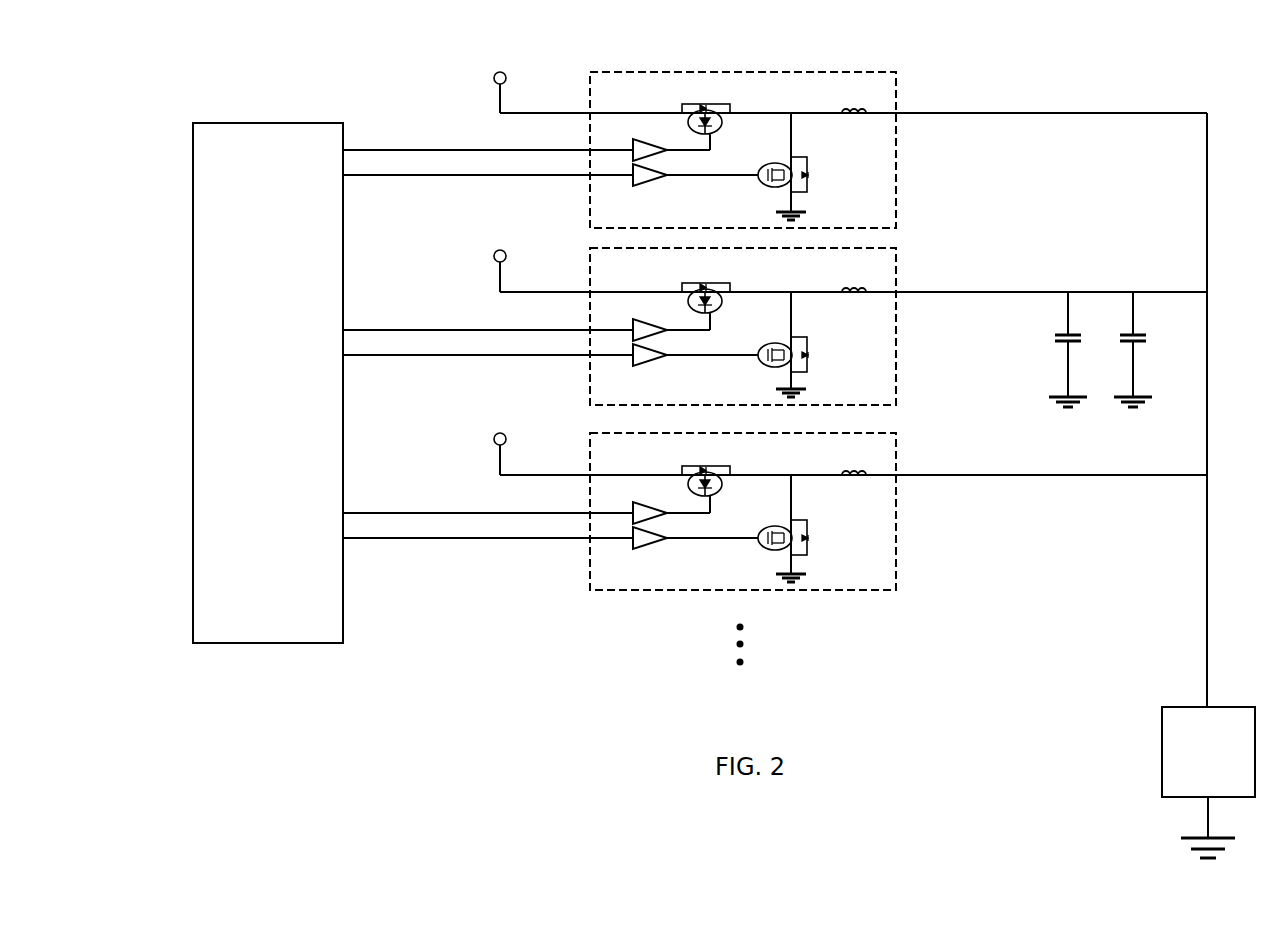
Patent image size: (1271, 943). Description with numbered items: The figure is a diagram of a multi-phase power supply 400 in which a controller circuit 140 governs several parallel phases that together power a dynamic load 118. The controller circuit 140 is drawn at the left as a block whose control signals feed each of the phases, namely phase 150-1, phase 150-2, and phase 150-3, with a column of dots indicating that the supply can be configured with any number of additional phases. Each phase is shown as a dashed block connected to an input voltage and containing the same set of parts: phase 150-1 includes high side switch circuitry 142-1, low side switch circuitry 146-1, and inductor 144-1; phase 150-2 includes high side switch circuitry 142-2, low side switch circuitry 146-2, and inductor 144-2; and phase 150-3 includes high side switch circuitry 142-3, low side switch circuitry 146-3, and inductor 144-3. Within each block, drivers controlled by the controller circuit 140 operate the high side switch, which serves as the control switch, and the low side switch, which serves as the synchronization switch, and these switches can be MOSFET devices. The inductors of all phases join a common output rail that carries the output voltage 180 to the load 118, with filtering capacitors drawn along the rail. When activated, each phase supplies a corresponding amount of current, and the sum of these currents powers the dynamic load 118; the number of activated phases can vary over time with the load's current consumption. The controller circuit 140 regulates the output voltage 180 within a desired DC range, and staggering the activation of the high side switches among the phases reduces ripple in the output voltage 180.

The multi-phase power conversion circuit 400 is at (252, 85).
The controller circuit 140 is at (258, 290).
The high side switch circuitry 142-1 is at (702, 103).
The high side switch circuitry 142-2 is at (707, 281).
The high side switch circuitry 142-3 is at (707, 464).
The inductor 144-1 is at (851, 104).
The inductor 144-2 is at (853, 283).
The inductor 144-3 is at (868, 447).
The low side switch circuitry 146-1 is at (810, 174).
The low side switch circuitry 146-2 is at (810, 354).
The low side switch circuitry 146-3 is at (810, 537).
The phase 150-1 is at (775, 135).
The phase 150-2 is at (775, 323).
The phase 150-3 is at (775, 507).
The output voltage 180 is at (1120, 113).
The dynamic load 118 is at (1194, 771).